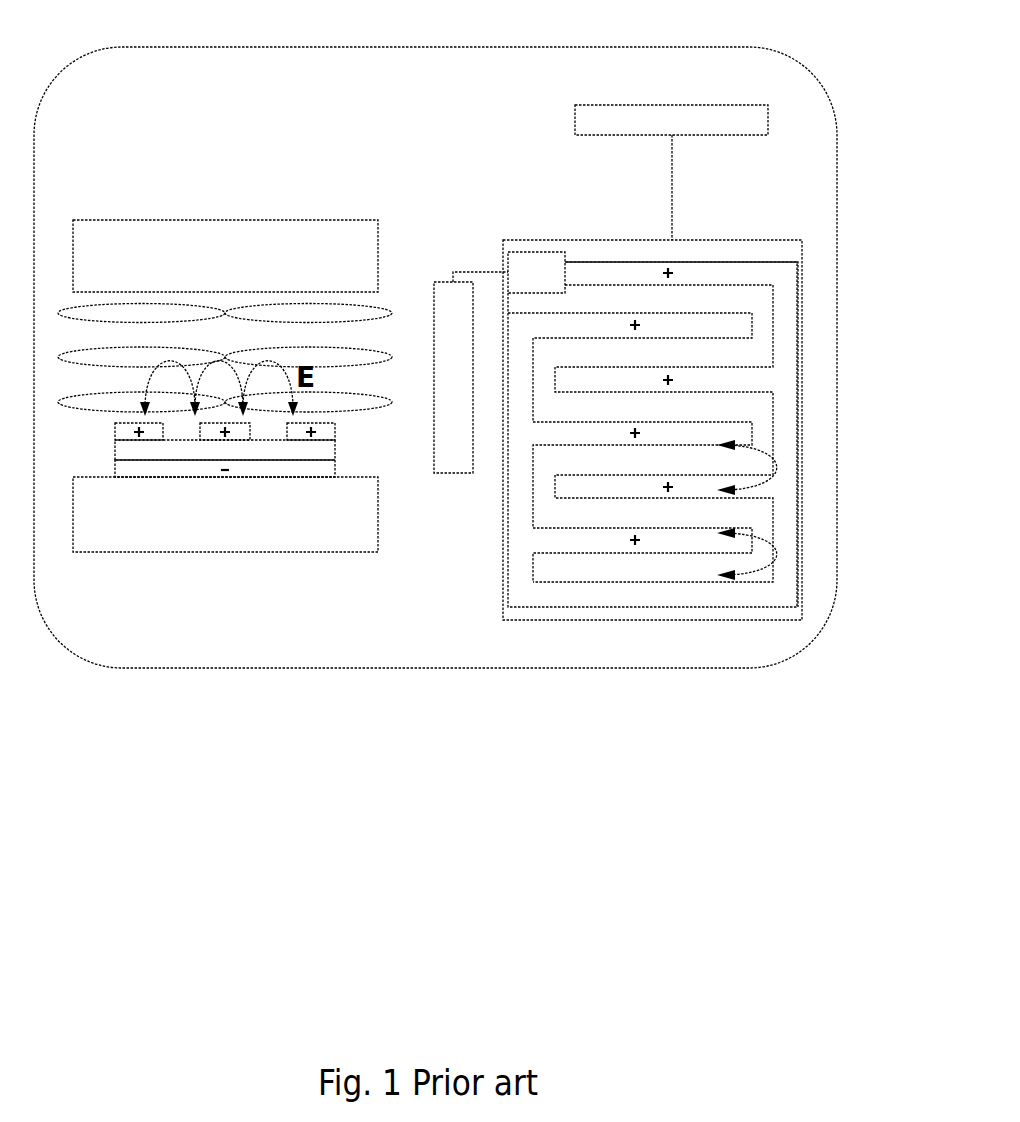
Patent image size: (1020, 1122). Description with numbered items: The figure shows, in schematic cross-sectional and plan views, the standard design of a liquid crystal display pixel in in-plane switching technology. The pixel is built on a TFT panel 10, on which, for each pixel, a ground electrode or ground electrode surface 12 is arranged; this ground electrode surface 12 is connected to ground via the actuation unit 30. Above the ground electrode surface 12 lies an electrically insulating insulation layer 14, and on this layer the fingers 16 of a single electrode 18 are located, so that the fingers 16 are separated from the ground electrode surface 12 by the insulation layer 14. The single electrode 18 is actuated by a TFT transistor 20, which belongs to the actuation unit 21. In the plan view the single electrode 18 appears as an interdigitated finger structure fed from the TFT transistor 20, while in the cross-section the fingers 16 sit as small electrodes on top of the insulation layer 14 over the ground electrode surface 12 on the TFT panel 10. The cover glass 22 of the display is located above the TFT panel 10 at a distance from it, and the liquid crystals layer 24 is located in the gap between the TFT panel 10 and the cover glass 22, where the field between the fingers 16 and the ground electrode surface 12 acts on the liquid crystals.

The TFT panel 10 is at (150, 536).
The ground electrode surface 12 is at (126, 471).
The insulation layer 14 is at (114, 449).
The fingers 16 is at (118, 421).
The single electrode 18 is at (362, 458).
The TFT transistor 20 is at (527, 266).
The actuation unit 21 is at (450, 466).
The cover glass 22 is at (105, 228).
The liquid crystals layer 24 is at (80, 310).
The actuation unit 30 is at (645, 110).